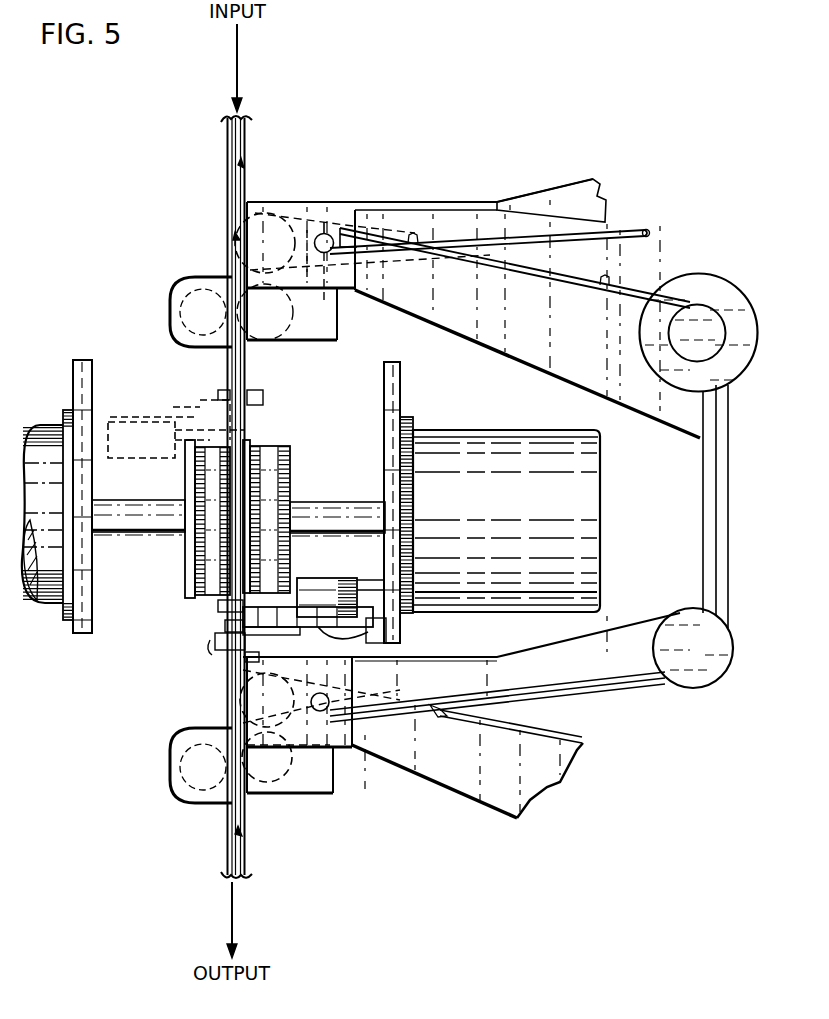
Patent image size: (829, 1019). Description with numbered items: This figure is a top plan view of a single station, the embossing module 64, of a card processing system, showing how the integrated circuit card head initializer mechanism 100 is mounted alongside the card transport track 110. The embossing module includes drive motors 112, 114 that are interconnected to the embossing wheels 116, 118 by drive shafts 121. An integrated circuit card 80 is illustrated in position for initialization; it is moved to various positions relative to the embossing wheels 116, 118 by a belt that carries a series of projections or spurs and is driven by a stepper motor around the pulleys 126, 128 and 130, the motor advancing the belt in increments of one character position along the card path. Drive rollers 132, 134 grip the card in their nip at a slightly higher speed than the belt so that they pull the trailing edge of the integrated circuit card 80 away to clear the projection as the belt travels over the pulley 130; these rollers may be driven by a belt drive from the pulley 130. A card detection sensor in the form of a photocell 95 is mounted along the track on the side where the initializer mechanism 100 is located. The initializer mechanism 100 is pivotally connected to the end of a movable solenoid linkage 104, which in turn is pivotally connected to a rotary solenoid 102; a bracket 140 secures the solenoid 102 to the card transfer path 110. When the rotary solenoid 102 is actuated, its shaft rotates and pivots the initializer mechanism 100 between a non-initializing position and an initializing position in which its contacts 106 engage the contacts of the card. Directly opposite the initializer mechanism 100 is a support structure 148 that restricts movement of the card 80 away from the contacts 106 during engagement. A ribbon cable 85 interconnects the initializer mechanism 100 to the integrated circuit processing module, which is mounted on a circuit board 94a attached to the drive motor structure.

The embossing module 64 is at (506, 124).
The card transport track 110 is at (247, 139).
The pulley 126 is at (266, 212).
The integrated circuit card head initializer mechanism 100 is at (146, 405).
The circuit board 94a is at (383, 403).
The drive motor 112 is at (58, 491).
The drive shaft 121 is at (155, 500).
The embossing wheel 116 is at (293, 471).
The embossing wheel 118 is at (184, 557).
The drive motor 114 is at (511, 506).
The bracket 140 is at (300, 578).
The rotary solenoid 102 is at (374, 561).
The contacts 106 is at (240, 603).
The movable solenoid linkage 104 is at (230, 614).
The support structure 148 is at (222, 630).
The photocell 95 is at (214, 648).
The integrated circuit card 80 is at (230, 663).
The ribbon cable 85 is at (352, 638).
The pulley 130 is at (240, 706).
The drive roller 134 is at (288, 797).
The drive roller 132 is at (190, 806).
The pulley 128 is at (716, 690).